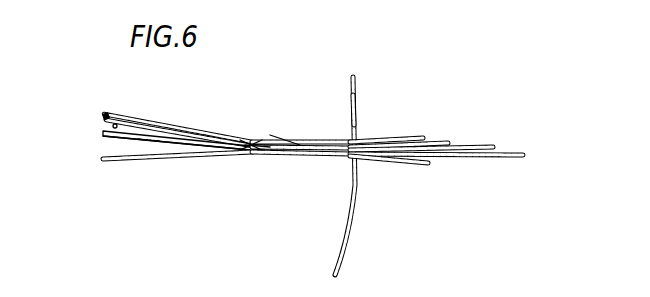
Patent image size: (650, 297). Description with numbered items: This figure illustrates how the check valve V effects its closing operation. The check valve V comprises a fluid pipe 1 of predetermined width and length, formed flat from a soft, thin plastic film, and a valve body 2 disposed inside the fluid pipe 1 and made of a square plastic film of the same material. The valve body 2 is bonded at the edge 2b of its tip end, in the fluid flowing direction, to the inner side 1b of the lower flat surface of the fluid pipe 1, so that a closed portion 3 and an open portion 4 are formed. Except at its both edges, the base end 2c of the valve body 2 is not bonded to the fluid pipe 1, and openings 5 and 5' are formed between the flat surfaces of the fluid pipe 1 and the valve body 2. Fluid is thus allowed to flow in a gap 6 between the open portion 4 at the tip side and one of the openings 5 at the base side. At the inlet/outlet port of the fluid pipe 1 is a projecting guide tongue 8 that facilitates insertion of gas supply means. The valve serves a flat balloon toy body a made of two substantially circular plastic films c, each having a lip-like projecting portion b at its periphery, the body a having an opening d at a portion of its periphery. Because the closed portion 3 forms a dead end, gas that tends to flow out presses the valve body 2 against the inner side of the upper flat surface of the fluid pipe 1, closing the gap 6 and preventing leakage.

The flat balloon toy body a is at (357, 86).
The lip-like projecting portion b is at (402, 137).
The plastic film c is at (350, 110).
The opening d is at (430, 143).
The fluid pipe 1 is at (468, 143).
The inner side of flat surface of fluid pipe 1b is at (260, 152).
The valve body 2 is at (163, 122).
The edge of tip end of valve body 2b is at (258, 150).
The base end of valve body 2c is at (104, 116).
The closed portion 3 is at (222, 155).
The open portion 4 is at (248, 143).
The opening 5 is at (145, 126).
The opening 5' is at (146, 166).
The gap 6 is at (135, 128).
The guide tongue 8 is at (512, 150).
The check valve V is at (277, 135).